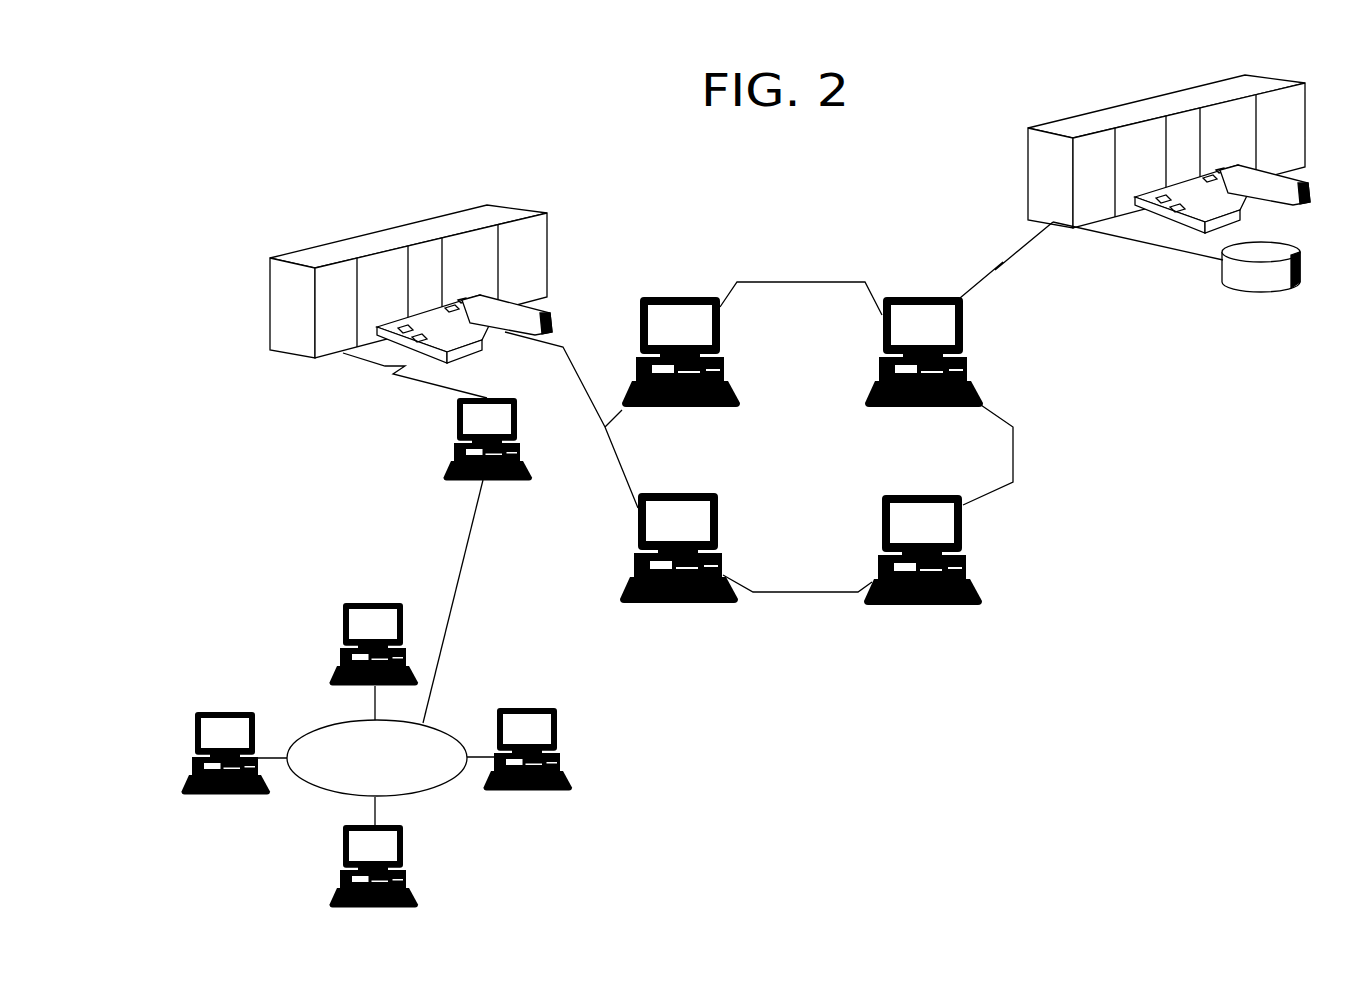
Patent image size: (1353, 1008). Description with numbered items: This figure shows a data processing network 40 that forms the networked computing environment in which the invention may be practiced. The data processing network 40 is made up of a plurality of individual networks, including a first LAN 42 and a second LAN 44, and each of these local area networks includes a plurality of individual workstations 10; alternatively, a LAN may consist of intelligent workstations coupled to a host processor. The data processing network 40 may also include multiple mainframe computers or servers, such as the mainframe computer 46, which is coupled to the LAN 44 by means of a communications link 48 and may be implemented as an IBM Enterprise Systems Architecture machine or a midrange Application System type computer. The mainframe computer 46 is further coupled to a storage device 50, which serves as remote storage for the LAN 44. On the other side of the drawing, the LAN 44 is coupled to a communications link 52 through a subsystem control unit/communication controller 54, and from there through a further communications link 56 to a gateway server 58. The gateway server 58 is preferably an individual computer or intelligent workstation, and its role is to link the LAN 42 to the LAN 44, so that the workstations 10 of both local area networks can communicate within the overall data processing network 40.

The workstation 10 is at (676, 297).
The data processing network 40 is at (803, 272).
The LAN 42 is at (376, 665).
The LAN 44 is at (866, 437).
The mainframe computer 46 is at (1092, 112).
The communications link 48 is at (1020, 243).
The storage device 50 is at (1303, 253).
The communications link 52 is at (578, 366).
The subsystem control unit/communication controller 54 is at (413, 222).
The communications link 56 is at (388, 368).
The gateway server 58 is at (523, 412).